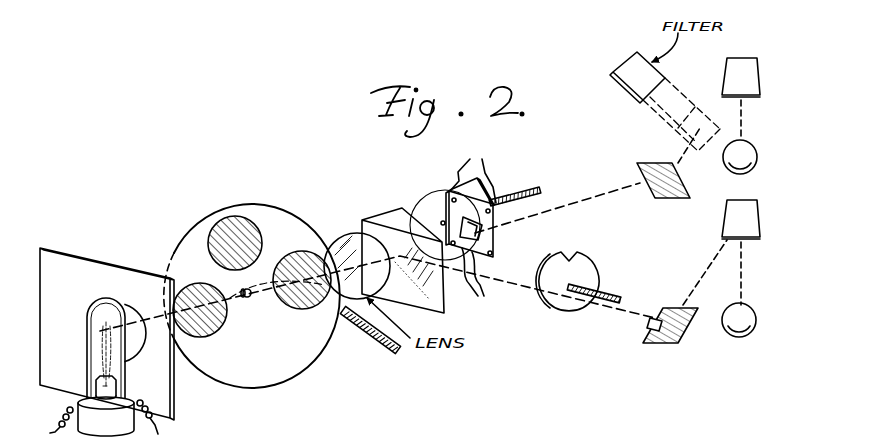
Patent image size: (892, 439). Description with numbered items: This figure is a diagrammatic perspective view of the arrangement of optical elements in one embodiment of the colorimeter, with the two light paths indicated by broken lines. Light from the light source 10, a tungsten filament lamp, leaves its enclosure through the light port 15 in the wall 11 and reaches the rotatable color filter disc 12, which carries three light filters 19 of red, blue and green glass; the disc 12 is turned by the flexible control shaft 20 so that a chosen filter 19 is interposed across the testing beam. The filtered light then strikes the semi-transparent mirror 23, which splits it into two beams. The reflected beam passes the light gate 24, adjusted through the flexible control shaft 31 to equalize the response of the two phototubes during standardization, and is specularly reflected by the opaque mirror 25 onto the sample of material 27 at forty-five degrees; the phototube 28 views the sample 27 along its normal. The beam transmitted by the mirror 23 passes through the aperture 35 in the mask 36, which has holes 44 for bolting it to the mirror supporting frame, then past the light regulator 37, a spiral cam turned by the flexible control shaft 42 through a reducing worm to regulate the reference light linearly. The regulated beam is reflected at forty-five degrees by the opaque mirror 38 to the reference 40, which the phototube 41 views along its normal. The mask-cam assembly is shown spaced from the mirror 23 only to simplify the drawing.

The light source 10 is at (94, 362).
The wall 11 is at (60, 262).
The rotatable color filter disc 12 is at (303, 360).
The light port 15 is at (123, 304).
The light filters 19 is at (172, 300).
The flexible control shaft 20 is at (384, 353).
The semi-transparent mirror 23 is at (388, 213).
The light gate 24 is at (565, 255).
The opaque mirror 25 is at (686, 342).
The sample of material 27 is at (762, 222).
The phototube 28 is at (757, 322).
The flexible control shaft 31 is at (618, 296).
The aperture 35 is at (485, 227).
The mask 36 is at (478, 236).
The light regulator 37 is at (432, 194).
The opaque mirror 38 is at (667, 200).
The reference 40 is at (758, 75).
The phototube 41 is at (758, 160).
The flexible control shaft 42 is at (533, 190).
The holes 44 is at (473, 228).